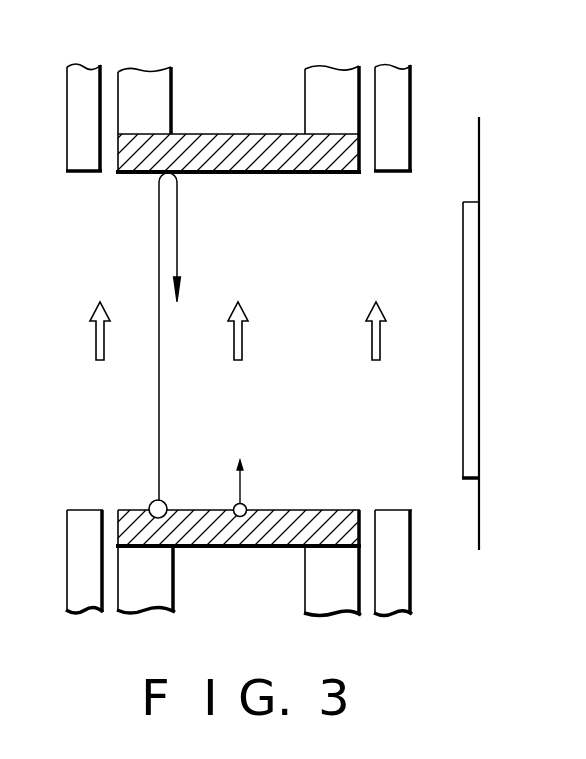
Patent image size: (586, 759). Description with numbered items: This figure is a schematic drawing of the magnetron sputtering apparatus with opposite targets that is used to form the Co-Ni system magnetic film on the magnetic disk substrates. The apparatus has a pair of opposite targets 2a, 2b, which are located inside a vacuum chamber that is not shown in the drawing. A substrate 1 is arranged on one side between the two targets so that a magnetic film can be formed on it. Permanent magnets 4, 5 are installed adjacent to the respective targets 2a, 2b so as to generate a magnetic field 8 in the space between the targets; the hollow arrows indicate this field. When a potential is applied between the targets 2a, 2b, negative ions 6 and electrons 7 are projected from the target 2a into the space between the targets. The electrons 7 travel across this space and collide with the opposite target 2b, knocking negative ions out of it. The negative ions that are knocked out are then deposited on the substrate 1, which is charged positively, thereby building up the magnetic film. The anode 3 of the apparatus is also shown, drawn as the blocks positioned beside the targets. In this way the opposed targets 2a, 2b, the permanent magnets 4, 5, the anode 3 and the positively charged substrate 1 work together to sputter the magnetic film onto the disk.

The substrate 1 is at (463, 418).
The target 2a is at (320, 509).
The target 2b is at (297, 174).
The anode 3 is at (402, 135).
The permanent magnet 4 is at (165, 112).
The permanent magnet 5 is at (312, 590).
The negative ions 6 is at (248, 487).
The electrons 7 is at (158, 440).
The magnetic field 8 is at (95, 355).